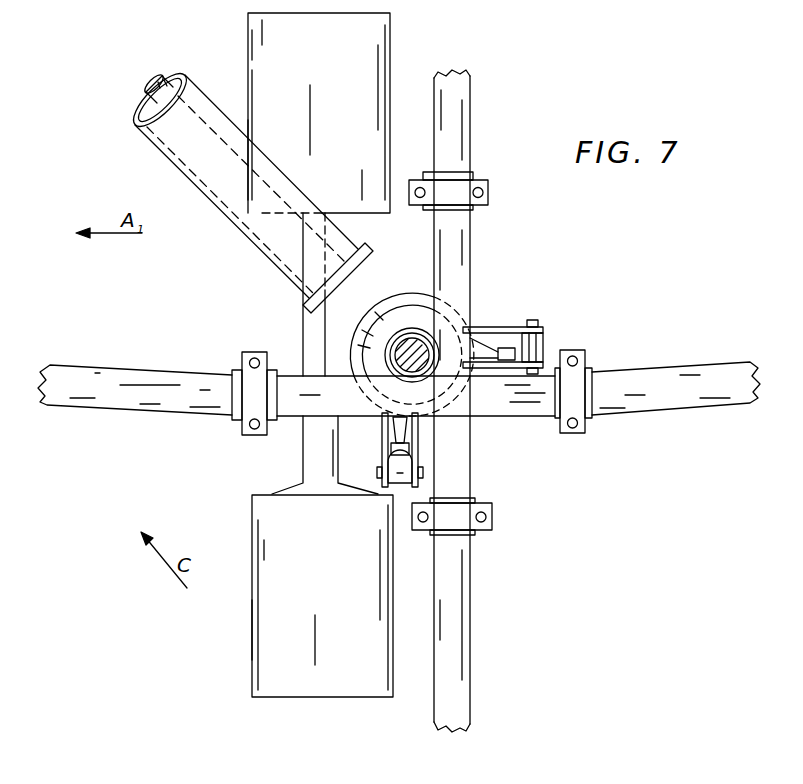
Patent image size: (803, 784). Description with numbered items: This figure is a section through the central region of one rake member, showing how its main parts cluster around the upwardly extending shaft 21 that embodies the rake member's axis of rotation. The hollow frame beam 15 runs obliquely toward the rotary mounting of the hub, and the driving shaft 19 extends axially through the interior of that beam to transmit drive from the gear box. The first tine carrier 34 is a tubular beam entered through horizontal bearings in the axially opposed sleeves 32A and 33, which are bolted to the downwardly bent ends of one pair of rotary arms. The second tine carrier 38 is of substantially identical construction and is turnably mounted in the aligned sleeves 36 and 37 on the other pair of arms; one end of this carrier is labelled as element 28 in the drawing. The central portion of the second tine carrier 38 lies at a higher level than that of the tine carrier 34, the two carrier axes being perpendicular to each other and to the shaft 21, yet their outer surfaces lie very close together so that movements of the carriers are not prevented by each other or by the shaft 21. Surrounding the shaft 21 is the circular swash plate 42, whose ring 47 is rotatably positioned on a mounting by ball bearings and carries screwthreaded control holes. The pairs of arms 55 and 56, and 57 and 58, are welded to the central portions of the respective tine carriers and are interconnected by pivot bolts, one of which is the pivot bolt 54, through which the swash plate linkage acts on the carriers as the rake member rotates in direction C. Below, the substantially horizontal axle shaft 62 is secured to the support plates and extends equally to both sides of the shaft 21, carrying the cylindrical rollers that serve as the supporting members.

The hollow frame beam 15 is at (147, 127).
The driving shaft 19 is at (142, 97).
The upwardly extending shaft 21 is at (412, 338).
The left arm 28 is at (130, 354).
The sleeve 32A is at (493, 535).
The sleeve 33 is at (478, 178).
The tine carrier 34 is at (455, 112).
The sleeve 36 is at (608, 428).
The sleeve 37 is at (240, 424).
The second tine carrier 38 is at (688, 354).
The swash plate 42 is at (348, 325).
The ring 47 is at (390, 296).
The pivot bolt 54 is at (538, 322).
The arm 55 is at (378, 437).
The arm 56 is at (418, 461).
The arm 57 is at (546, 353).
The arm 58 is at (490, 328).
The axle shaft 62 is at (303, 446).